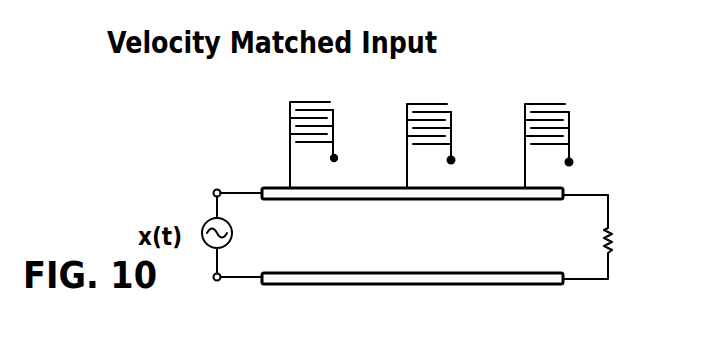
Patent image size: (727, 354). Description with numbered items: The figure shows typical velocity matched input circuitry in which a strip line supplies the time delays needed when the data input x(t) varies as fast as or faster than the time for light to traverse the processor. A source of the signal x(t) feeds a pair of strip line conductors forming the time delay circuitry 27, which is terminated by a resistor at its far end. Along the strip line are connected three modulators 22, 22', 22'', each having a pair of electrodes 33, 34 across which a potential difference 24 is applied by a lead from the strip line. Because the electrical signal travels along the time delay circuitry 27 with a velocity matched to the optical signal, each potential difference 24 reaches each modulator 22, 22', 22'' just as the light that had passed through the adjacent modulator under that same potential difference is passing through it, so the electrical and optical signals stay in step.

The modulator 22 is at (336, 112).
The modulator 22' is at (459, 132).
The modulator 22'' is at (590, 132).
The electrode 34 is at (290, 123).
The potential difference 24 is at (290, 172).
The electrode 33 is at (337, 153).
The time delay circuitry 27 is at (382, 193).